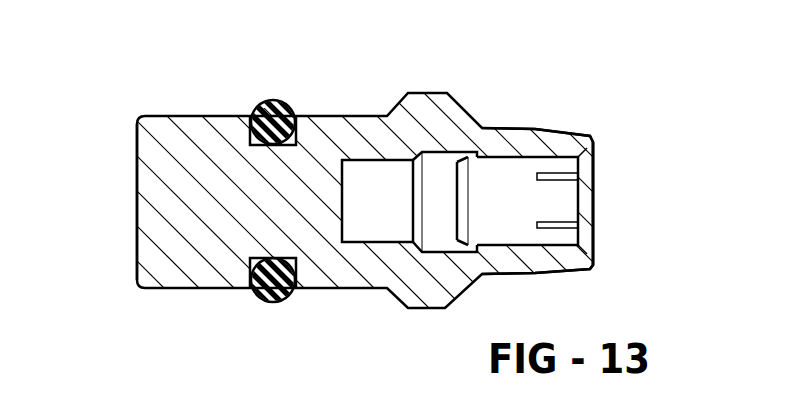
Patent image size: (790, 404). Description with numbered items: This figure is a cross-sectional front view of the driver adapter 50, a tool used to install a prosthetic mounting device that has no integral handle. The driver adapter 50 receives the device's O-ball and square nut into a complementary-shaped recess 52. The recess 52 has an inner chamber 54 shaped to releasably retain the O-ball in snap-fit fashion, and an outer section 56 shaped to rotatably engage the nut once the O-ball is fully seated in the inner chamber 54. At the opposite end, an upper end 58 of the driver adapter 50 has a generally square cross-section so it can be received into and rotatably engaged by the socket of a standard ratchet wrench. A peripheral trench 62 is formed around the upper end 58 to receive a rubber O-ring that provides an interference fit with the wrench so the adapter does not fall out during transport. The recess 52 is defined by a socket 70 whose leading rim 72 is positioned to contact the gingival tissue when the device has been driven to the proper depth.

The driver adapter 50 is at (553, 116).
The recess 52 is at (380, 205).
The inner chamber 54 is at (442, 197).
The outer section 56 is at (488, 212).
The upper end 58 is at (137, 187).
The peripheral trench 62 is at (250, 266).
The socket 70 is at (492, 142).
The leading rim 72 is at (595, 139).